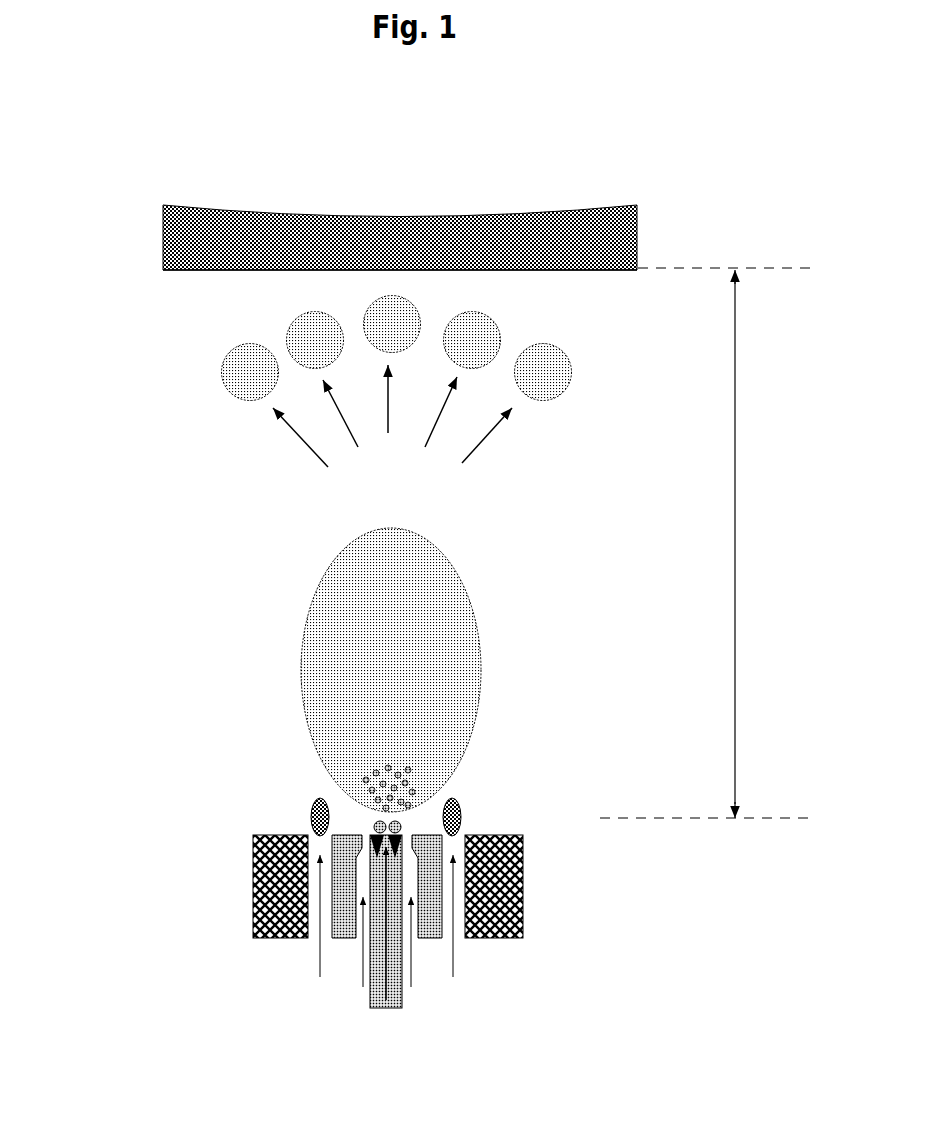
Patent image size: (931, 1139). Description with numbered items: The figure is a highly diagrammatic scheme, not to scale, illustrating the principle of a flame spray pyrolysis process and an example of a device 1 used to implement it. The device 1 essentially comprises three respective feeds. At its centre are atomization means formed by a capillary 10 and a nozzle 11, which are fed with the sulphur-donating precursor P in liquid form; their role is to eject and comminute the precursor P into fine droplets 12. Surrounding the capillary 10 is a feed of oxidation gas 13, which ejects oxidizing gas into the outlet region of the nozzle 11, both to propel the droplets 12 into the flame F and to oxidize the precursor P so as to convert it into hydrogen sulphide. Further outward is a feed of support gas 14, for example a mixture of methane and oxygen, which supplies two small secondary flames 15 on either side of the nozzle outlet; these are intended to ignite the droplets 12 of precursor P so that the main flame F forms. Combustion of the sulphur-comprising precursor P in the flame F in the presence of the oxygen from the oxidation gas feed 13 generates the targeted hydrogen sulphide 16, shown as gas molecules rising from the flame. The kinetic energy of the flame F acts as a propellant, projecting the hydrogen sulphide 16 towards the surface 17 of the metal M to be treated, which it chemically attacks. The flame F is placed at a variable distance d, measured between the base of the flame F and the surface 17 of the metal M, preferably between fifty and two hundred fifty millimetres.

The device 1 is at (147, 575).
The capillary 10 is at (368, 1000).
The nozzle 11 is at (400, 837).
The droplets 12 is at (363, 787).
The feed of oxidation gas 13 is at (362, 985).
The feed of support gas 14 is at (318, 953).
The secondary flames 15 is at (311, 817).
The hydrogen sulphide 16 is at (560, 395).
The surface 17 is at (298, 269).
The metal M is at (192, 238).
The flame F is at (447, 560).
The precursor P is at (385, 900).
The distance d is at (706, 543).